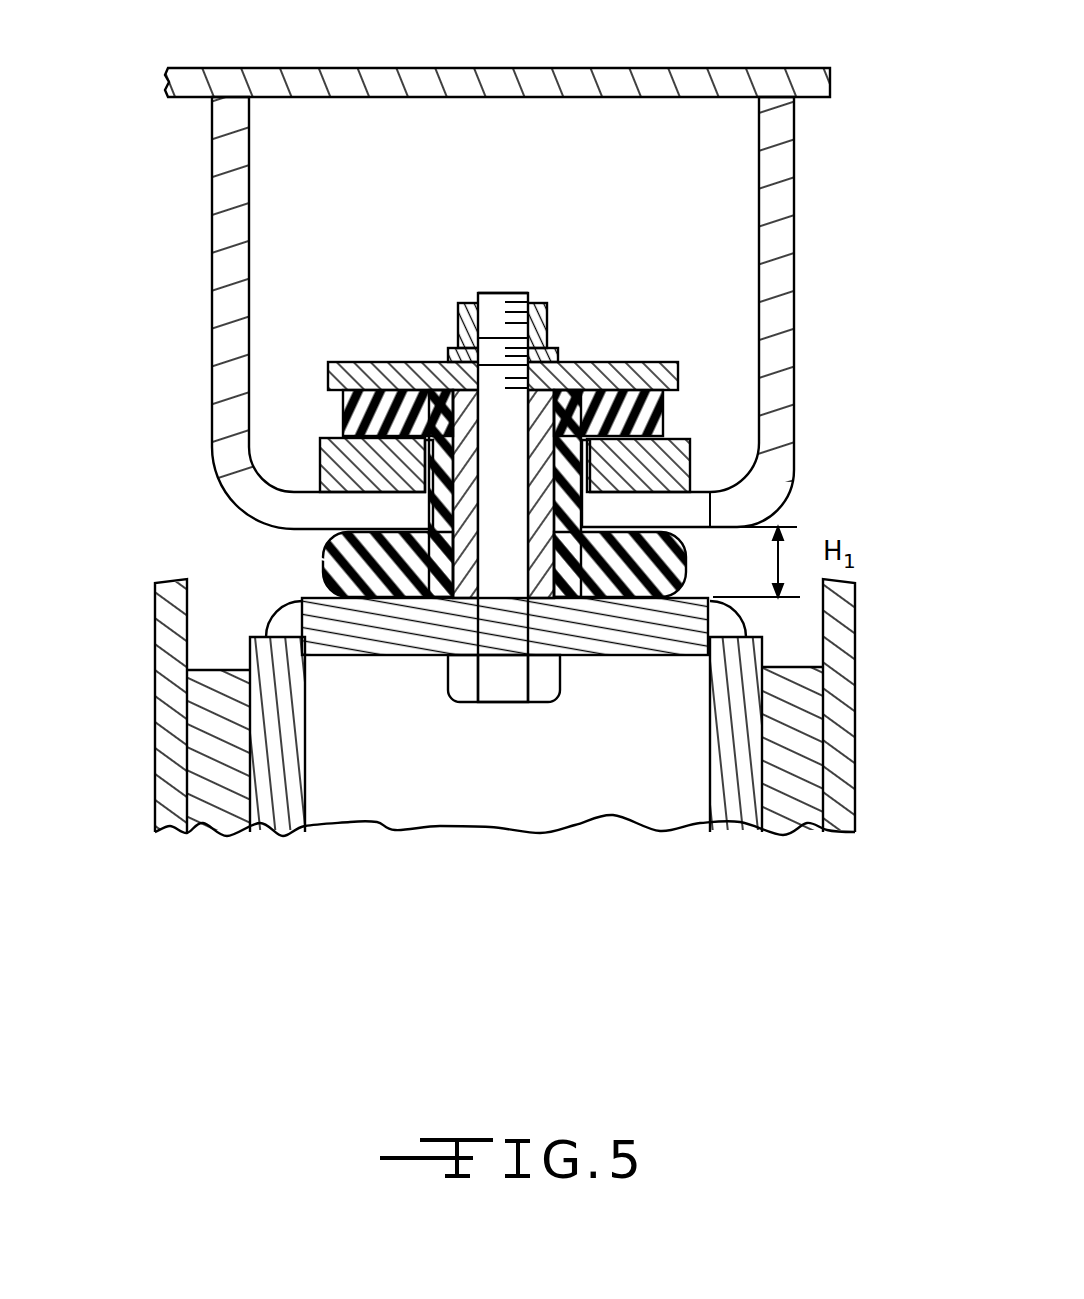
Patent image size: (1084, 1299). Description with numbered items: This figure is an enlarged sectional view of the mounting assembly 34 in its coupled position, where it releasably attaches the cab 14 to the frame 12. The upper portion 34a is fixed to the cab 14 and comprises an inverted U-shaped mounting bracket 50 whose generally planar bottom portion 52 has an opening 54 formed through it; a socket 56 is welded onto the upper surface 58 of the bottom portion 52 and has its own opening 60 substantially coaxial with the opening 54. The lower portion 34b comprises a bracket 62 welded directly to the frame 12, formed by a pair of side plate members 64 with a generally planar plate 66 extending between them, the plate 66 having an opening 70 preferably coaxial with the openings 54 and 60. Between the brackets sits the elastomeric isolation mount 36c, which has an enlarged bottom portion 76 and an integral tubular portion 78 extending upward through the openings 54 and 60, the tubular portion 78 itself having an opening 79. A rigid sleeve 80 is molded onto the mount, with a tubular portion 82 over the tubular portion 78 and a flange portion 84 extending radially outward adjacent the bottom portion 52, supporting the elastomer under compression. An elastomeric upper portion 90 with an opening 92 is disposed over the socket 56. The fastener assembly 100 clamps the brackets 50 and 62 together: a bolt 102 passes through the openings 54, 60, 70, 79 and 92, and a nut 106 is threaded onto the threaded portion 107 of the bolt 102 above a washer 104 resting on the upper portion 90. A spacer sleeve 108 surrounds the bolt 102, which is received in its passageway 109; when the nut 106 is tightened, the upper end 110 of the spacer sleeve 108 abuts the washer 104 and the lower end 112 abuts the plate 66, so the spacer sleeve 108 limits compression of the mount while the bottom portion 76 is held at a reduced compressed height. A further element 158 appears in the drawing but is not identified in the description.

The frame 12 is at (535, 812).
The cab 14 is at (566, 70).
The mounting assembly 34 is at (479, 313).
The upper portion 34a is at (528, 313).
The lower portion 34b is at (515, 748).
The isolation mount 36c is at (515, 727).
The mounting bracket 50 is at (739, 312).
The bottom portion 52 is at (645, 510).
The opening 54 is at (668, 518).
The socket 56 is at (685, 522).
The upper surface 58 is at (345, 450).
The opening 60 is at (553, 458).
The bracket 62 is at (760, 655).
The side plate members 64 is at (275, 820).
The plate 66 is at (505, 672).
The opening 70 is at (526, 576).
The bottom portion 76 is at (389, 635).
The tubular portion 78 is at (345, 518).
The opening 79 is at (375, 600).
The sleeve 80 is at (407, 600).
The tubular portion 82 is at (345, 390).
The flange portion 84 is at (327, 550).
The upper portion 90 is at (655, 363).
The opening 92 is at (555, 498).
The fastener assembly 100 is at (522, 488).
The bolt 102 is at (514, 635).
The washer 104 is at (522, 321).
The nut 106 is at (467, 305).
The threaded portion 107 is at (490, 293).
The spacer sleeve 108 is at (546, 565).
The passageway 109 is at (497, 635).
The upper end 110 is at (430, 362).
The lower end 112 is at (430, 655).
The outer wall 158 is at (168, 820).